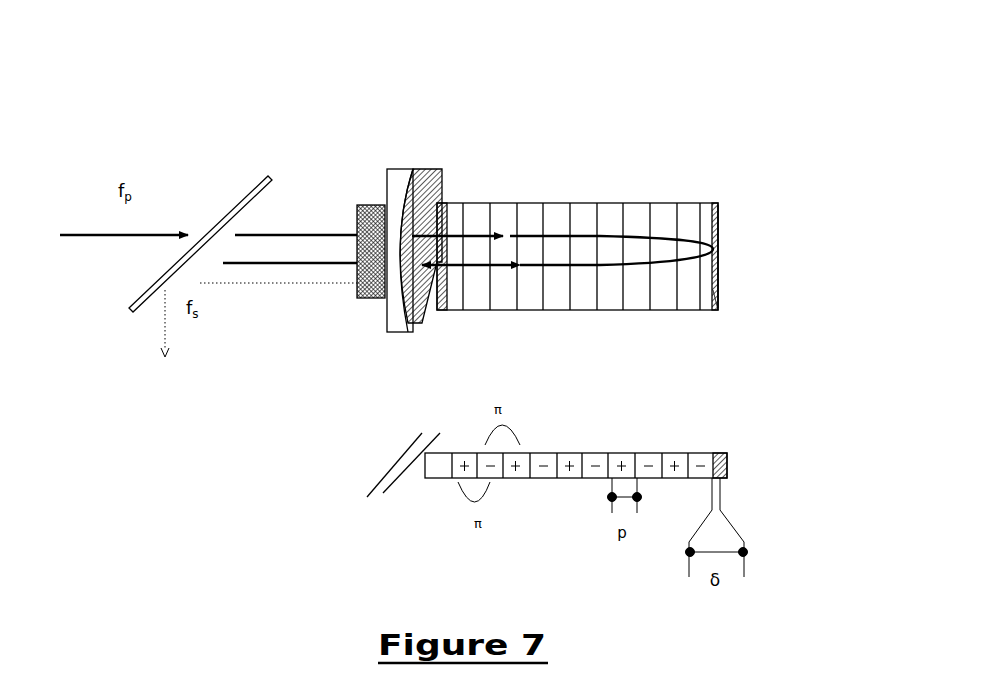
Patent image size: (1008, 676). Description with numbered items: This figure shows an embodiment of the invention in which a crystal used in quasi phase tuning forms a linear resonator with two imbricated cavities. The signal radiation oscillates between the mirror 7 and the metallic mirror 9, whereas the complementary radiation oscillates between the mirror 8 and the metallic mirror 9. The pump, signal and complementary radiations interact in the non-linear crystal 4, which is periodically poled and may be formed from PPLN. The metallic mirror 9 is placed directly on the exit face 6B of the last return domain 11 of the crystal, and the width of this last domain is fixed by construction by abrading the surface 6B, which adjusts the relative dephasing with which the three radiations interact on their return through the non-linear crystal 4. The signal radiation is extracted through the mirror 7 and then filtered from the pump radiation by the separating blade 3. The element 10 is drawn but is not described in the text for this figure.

The separating blade 3 is at (254, 186).
The non-linear crystal 4 is at (548, 203).
The exit face 6B is at (718, 293).
The mirror 7 is at (396, 169).
The mirror 8 is at (442, 203).
The metallic mirror 9 is at (718, 228).
The pump source window 10 is at (368, 300).
The last return domain 11 is at (706, 203).